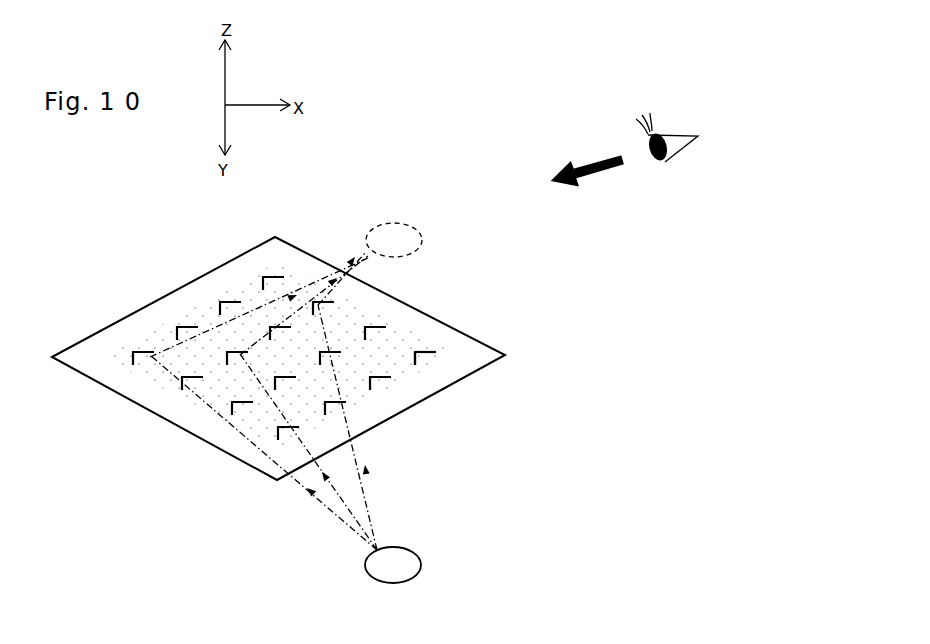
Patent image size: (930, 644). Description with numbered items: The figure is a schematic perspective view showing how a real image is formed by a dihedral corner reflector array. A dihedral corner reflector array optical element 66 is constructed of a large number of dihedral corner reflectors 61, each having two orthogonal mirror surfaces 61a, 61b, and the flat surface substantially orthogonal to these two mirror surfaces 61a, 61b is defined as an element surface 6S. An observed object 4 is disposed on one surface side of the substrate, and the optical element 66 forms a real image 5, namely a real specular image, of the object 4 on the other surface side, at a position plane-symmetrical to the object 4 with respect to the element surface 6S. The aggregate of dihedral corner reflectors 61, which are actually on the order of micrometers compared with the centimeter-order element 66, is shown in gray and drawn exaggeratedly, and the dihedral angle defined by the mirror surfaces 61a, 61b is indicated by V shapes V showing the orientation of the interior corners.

The observed object 4 is at (365, 570).
The real image 5 is at (403, 222).
The element surface 6S is at (200, 280).
The dihedral corner reflector array optical element 66 is at (436, 340).
The dihedral corner reflector 61 is at (147, 357).
The mirror surface 61a is at (415, 365).
The mirror surface 61b is at (437, 352).
The V shape V is at (665, 165).